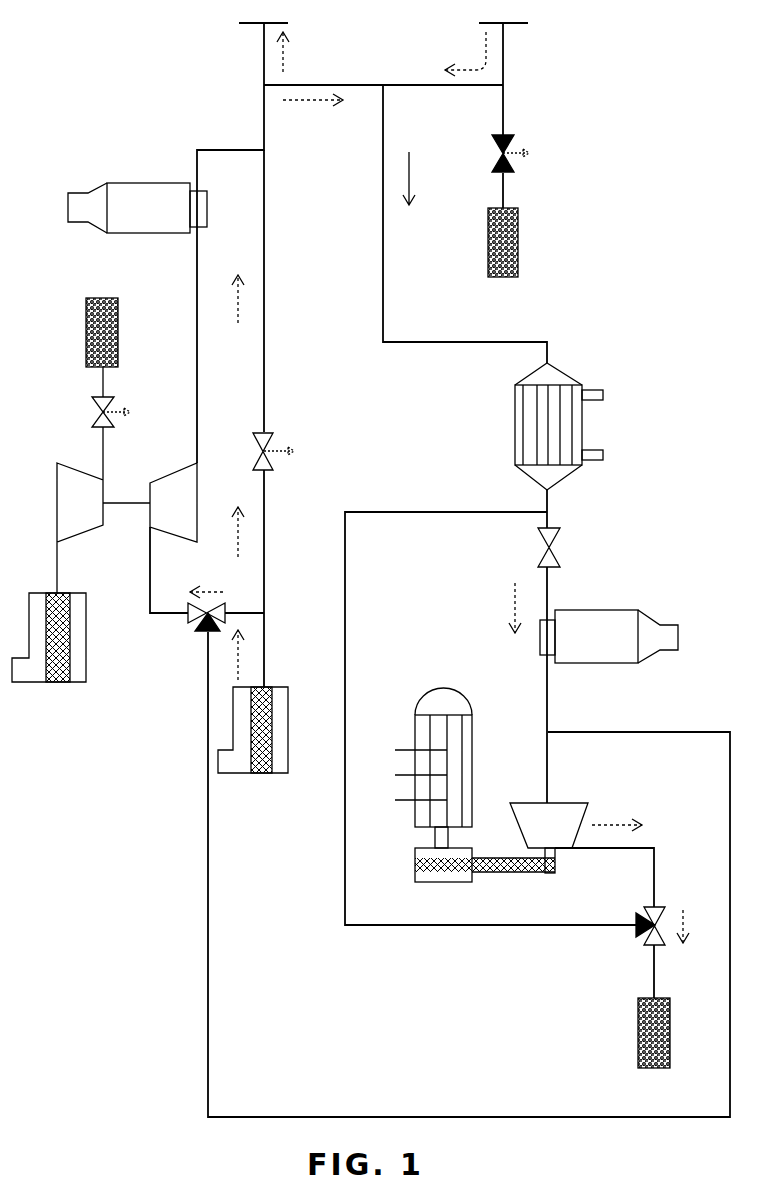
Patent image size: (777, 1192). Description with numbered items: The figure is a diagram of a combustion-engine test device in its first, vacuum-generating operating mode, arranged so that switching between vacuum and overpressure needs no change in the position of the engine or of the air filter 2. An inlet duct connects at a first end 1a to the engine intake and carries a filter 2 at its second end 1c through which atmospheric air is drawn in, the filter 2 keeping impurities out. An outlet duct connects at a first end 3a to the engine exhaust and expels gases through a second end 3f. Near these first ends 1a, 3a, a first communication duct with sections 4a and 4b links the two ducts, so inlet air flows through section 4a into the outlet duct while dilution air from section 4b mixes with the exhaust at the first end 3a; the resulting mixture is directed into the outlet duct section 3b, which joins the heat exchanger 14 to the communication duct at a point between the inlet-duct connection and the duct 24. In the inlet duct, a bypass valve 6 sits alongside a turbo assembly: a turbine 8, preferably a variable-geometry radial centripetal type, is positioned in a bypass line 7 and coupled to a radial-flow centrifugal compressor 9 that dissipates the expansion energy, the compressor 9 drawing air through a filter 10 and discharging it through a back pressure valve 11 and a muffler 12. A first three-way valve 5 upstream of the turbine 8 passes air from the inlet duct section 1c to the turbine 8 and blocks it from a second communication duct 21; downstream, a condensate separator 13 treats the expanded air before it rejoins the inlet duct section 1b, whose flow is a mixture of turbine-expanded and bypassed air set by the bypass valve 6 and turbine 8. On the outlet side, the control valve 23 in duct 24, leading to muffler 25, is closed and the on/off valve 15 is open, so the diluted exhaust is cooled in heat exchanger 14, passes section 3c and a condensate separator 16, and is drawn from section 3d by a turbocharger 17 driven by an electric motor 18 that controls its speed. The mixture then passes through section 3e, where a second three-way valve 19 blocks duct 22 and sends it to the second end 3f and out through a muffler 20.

The first end of the inlet duct 1a is at (262, 70).
The inlet duct section 1b is at (262, 142).
The second end of the inlet duct 1c is at (265, 640).
The filter 2 is at (268, 777).
The first end of the outlet duct 3a is at (508, 43).
The outlet duct section 3b is at (393, 305).
The outlet duct section 3c is at (558, 510).
The outlet duct section 3d is at (543, 707).
The outlet duct section 3e is at (663, 848).
The second end of the outlet duct 3f is at (660, 965).
The first communication duct section 4a is at (342, 82).
The first communication duct section 4b is at (422, 82).
The first three-way valve 5 is at (187, 627).
The bypass valve 6 is at (288, 437).
The bypass line 7 is at (143, 585).
The turbine 8 is at (175, 472).
The compressor 9 is at (60, 462).
The filter 10 is at (65, 685).
The back pressure valve 11 is at (122, 393).
The muffler 12 is at (123, 320).
The condensate separator 13 is at (127, 173).
The heat exchanger 14 is at (573, 370).
The on/off valve 15 is at (562, 547).
The condensate separator 16 is at (653, 608).
The turbocharger 17 is at (525, 793).
The electric motor 18 is at (420, 690).
The second three-way valve 19 is at (630, 945).
The muffler 20 is at (633, 1048).
The second communication duct 21 is at (372, 1110).
The duct 22 is at (382, 935).
The control valve 23 is at (520, 137).
The duct 24 is at (512, 192).
The muffler 25 is at (525, 242).